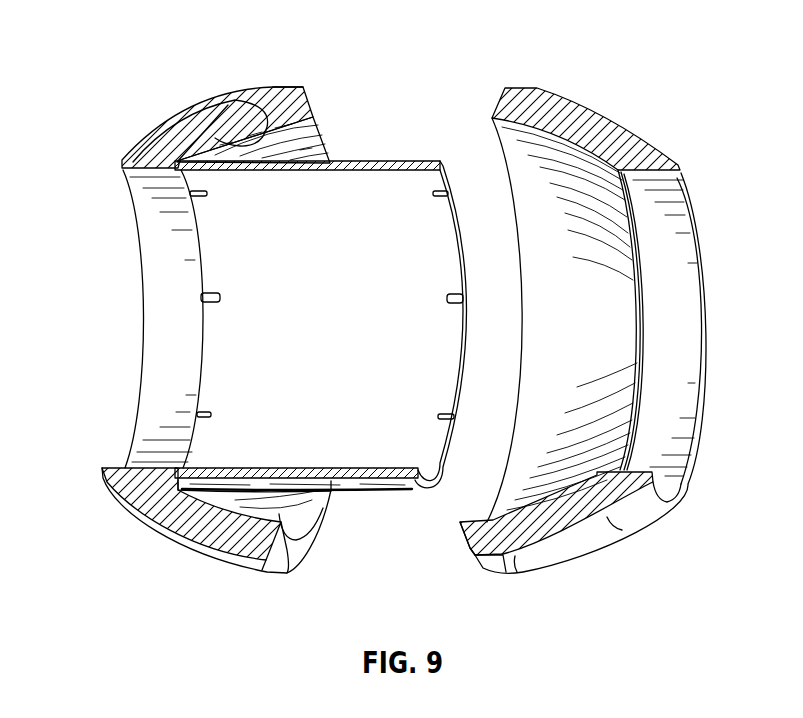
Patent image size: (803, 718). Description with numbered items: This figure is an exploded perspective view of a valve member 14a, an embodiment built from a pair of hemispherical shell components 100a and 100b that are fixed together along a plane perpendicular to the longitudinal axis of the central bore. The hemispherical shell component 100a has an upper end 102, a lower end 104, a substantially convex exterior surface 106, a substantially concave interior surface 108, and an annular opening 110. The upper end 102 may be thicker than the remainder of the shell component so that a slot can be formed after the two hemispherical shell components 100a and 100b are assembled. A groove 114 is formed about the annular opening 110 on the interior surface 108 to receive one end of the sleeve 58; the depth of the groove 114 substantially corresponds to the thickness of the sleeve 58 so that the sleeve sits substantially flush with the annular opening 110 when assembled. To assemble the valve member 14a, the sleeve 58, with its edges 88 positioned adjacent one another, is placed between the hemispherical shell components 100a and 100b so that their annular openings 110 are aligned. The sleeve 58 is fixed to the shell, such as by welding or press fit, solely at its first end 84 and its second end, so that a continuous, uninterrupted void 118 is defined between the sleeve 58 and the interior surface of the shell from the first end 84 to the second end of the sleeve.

The valve member 14a is at (163, 22).
The hemispherical shell component 100a is at (193, 117).
The hemispherical shell component 100b is at (583, 100).
The upper end 102 is at (280, 87).
The lower end 104 is at (260, 563).
The exterior surface 106 is at (143, 518).
The interior surface 108 is at (317, 128).
The annular opening 110 is at (147, 223).
The groove 114 is at (147, 152).
The void 118 is at (247, 135).
The sleeve 58 is at (413, 162).
The first end 84 is at (160, 463).
The edge 88 is at (407, 480).